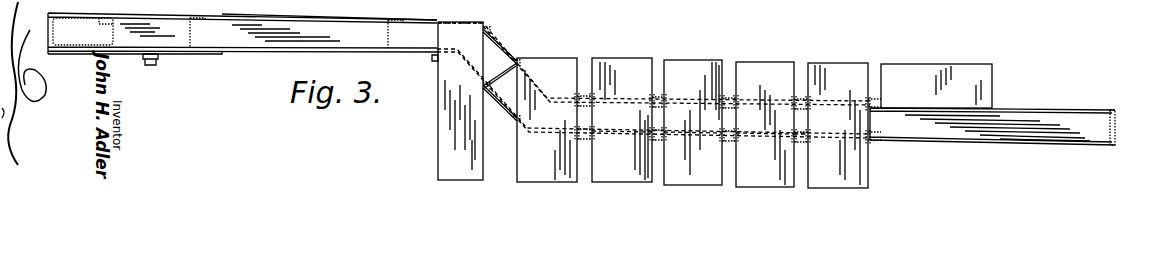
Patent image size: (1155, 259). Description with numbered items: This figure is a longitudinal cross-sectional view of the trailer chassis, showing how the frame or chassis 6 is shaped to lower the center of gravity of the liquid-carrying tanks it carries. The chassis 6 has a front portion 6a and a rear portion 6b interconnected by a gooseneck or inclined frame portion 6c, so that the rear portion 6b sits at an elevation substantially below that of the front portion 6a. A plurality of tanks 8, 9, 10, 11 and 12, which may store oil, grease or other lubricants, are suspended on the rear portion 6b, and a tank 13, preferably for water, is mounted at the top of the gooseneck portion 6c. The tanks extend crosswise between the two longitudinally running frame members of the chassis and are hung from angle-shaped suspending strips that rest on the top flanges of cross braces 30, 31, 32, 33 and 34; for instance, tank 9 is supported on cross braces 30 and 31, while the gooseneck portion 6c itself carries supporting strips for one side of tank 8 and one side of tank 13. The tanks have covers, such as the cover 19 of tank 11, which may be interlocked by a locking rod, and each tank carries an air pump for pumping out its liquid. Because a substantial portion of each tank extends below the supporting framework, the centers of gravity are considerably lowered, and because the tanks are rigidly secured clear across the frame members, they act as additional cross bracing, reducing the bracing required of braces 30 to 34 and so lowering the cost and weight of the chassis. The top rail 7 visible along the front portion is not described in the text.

The frame or chassis 6 is at (1040, 104).
The front portion 6a is at (265, 17).
The rear portion 6b is at (1090, 108).
The gooseneck or inclined frame portion 6c is at (497, 53).
The top rail 7 is at (365, 16).
The tank 8 is at (553, 57).
The tank 9 is at (627, 58).
The tank 10 is at (693, 60).
The tank 11 is at (765, 62).
The tank 12 is at (840, 63).
The tank 13 is at (470, 34).
The cover 19 is at (872, 118).
The cross brace 30 is at (622, 149).
The cross brace 31 is at (685, 185).
The cross brace 32 is at (765, 153).
The cross brace 33 is at (802, 140).
The cross brace 34 is at (873, 140).